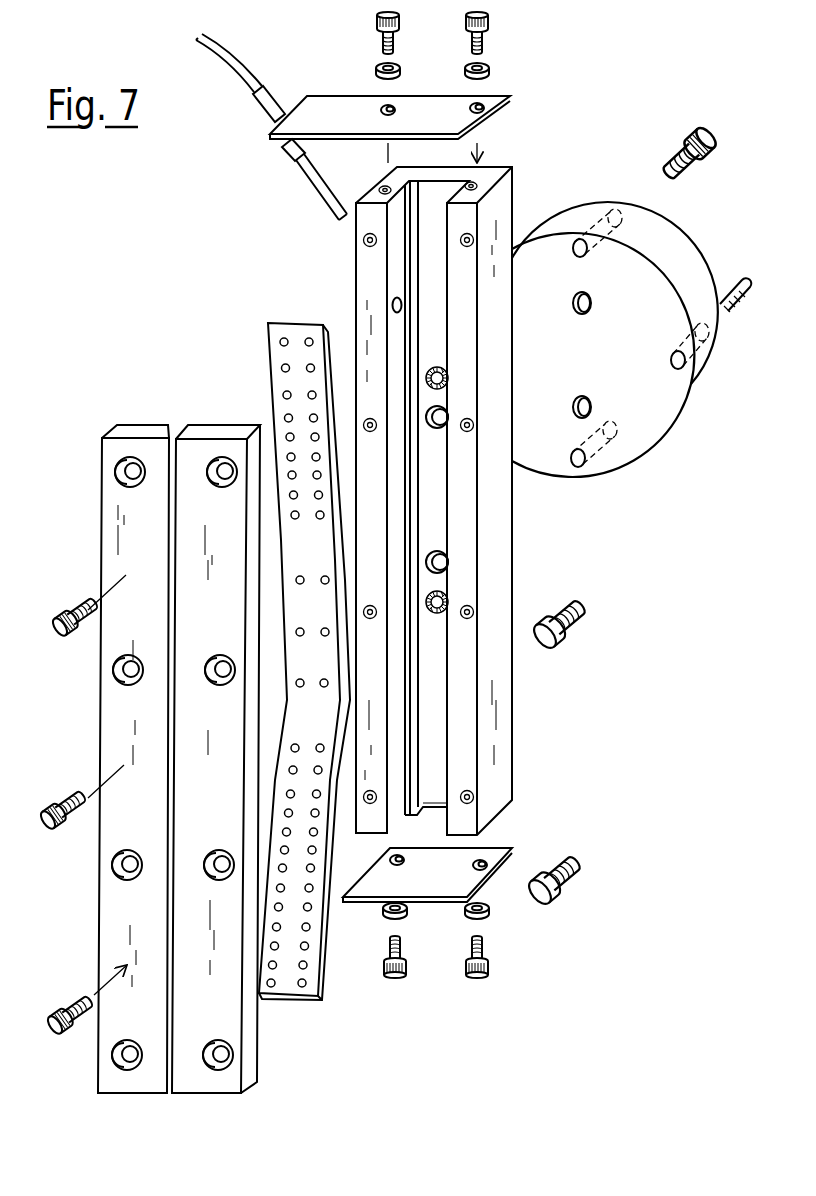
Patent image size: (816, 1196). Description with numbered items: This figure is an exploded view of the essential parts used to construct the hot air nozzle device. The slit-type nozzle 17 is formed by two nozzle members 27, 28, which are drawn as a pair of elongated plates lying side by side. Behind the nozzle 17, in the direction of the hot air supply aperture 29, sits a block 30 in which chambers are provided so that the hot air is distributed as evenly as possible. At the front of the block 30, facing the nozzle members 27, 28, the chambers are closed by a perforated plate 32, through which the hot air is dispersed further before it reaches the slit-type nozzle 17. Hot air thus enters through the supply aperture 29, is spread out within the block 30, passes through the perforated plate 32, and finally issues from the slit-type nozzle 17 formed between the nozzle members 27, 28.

The slit-type nozzle 17 is at (172, 517).
The nozzle member 27 is at (117, 892).
The nozzle member 28 is at (223, 1024).
The hot air supply aperture 29 is at (581, 420).
The block 30 is at (497, 180).
The perforated plate 32 is at (278, 349).